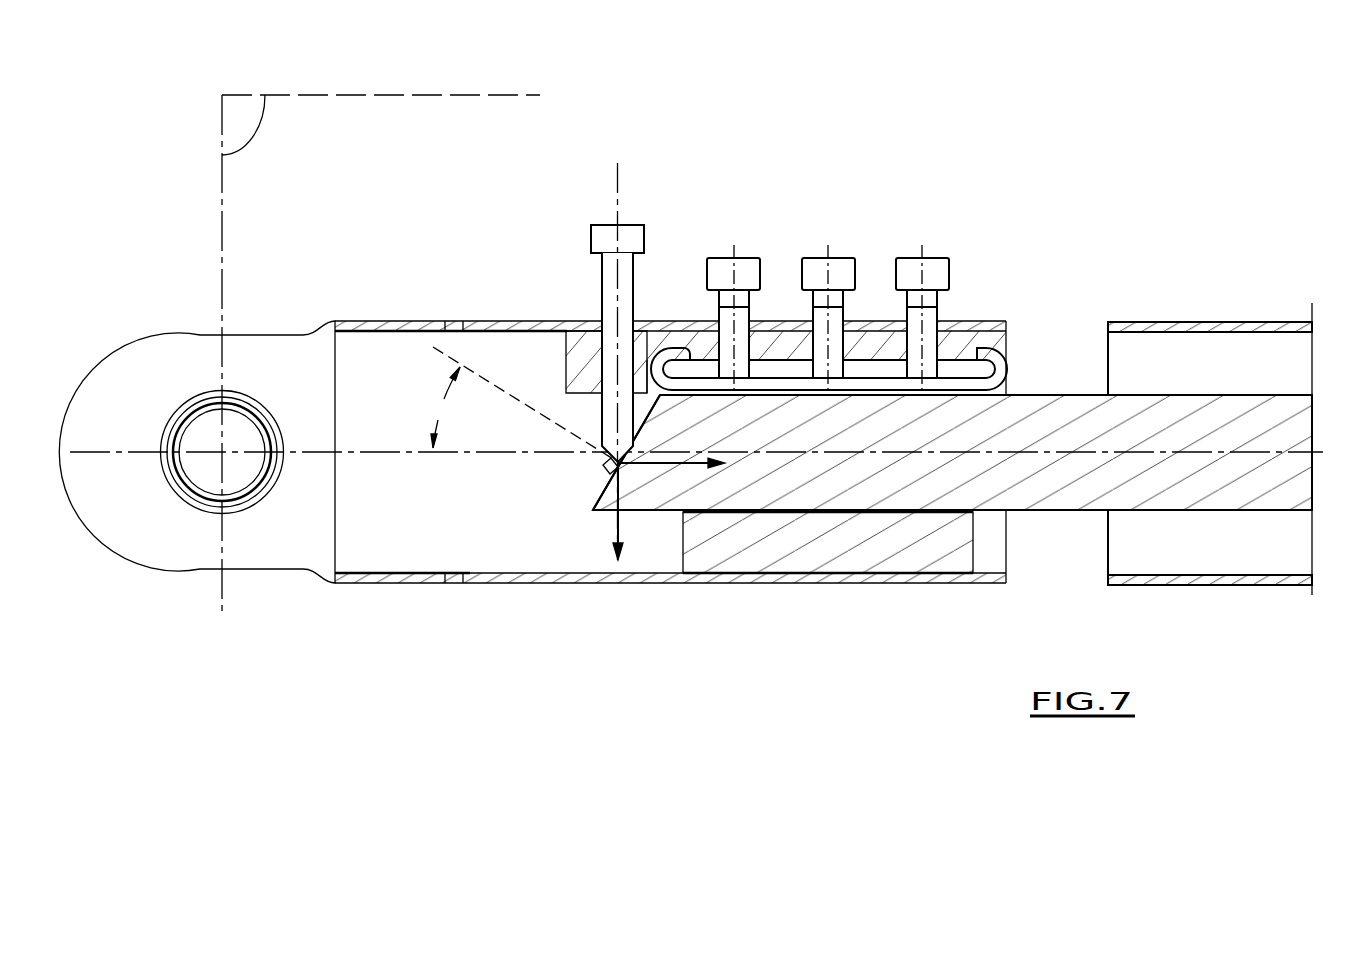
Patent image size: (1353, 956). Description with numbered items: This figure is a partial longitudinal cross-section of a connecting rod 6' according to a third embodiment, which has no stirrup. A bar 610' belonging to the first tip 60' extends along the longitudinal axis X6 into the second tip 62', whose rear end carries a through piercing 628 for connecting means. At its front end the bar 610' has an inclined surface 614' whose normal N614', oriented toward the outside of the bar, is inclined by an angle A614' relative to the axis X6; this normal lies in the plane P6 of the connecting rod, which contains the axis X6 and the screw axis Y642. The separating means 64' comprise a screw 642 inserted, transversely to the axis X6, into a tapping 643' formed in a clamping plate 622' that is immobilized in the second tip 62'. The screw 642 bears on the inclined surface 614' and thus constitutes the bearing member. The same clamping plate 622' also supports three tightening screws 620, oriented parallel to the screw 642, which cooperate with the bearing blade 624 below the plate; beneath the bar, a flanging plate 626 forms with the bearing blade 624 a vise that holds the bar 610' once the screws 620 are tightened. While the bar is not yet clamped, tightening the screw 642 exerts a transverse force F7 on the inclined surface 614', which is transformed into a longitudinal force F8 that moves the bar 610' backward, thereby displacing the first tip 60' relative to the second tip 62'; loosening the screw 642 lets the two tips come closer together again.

The connecting rod 6' is at (1186, 374).
The first tip 60' is at (1210, 505).
The bar 610' is at (952, 488).
The second tip 62' is at (532, 391).
The tightening screws 620 is at (908, 273).
The clamping plate 622' is at (744, 317).
The bearing blade 624 is at (992, 355).
The flanging plate 626 is at (875, 542).
The through piercing 628 is at (205, 427).
The separating means 64' is at (577, 547).
The screw 642 is at (603, 238).
The tapping 643' is at (574, 362).
The inclined surface 614' is at (591, 442).
The normal N614' is at (494, 368).
The angle A614' is at (426, 407).
The longitudinal axis X6 is at (1229, 452).
The axis of the adjusting screw Y642 is at (613, 344).
The plane P6 is at (381, 353).
The transverse force F7 is at (605, 511).
The longitudinal force F8 is at (671, 448).